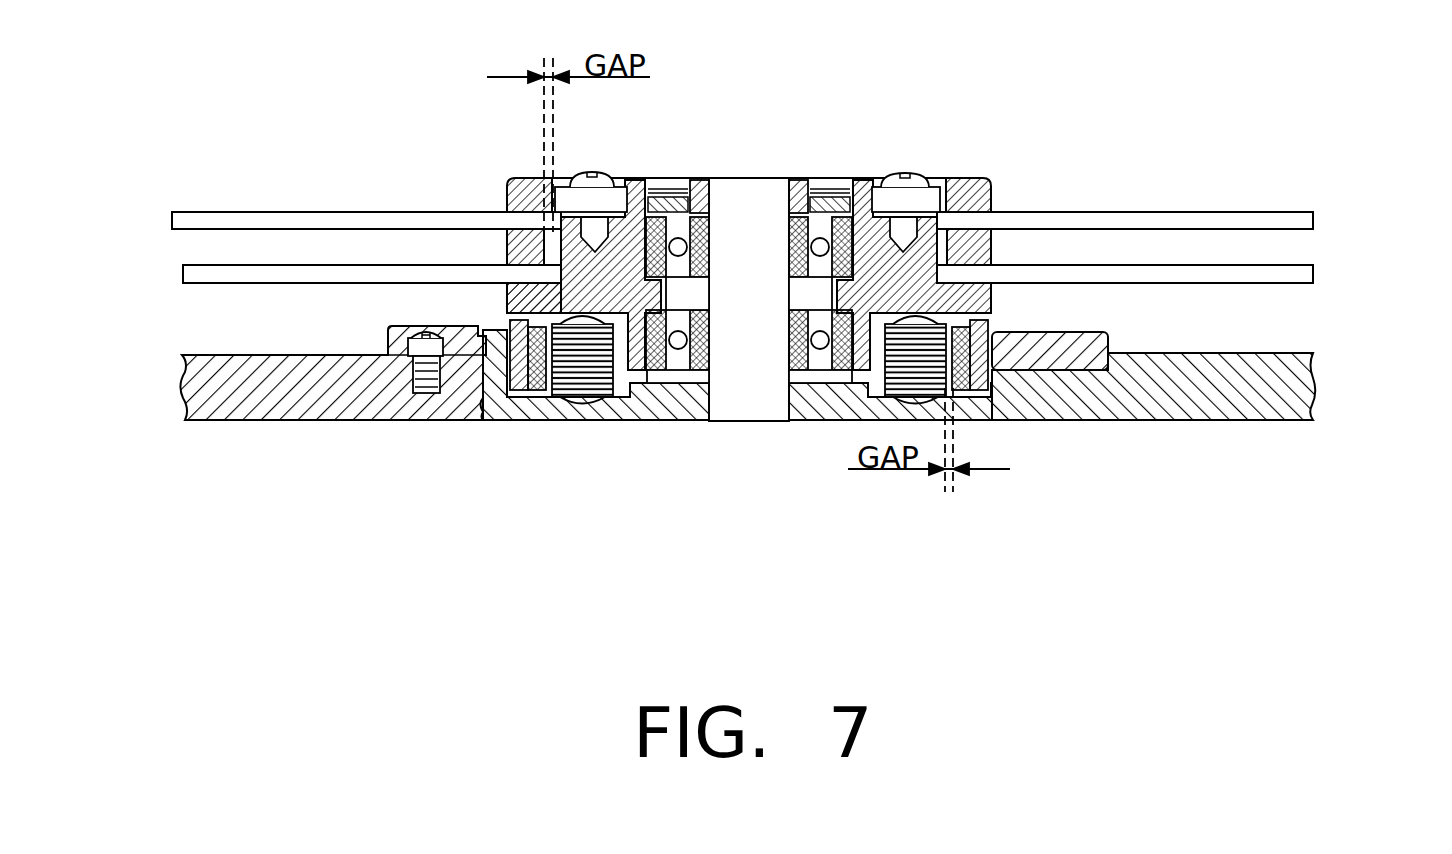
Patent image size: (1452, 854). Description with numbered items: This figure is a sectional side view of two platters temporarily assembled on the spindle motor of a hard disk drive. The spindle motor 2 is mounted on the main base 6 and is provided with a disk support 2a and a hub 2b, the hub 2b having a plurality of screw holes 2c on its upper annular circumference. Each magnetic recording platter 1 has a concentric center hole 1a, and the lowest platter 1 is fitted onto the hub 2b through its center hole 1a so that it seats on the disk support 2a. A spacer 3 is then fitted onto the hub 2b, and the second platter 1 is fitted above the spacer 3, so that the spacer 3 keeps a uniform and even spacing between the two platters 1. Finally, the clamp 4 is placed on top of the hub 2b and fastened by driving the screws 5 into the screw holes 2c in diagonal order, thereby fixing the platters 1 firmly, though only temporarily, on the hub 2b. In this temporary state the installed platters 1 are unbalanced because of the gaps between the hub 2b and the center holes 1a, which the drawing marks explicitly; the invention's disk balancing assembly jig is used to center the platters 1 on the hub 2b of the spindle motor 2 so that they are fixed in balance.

The magnetic recording platter 1 is at (1302, 222).
The center hole 1a is at (510, 247).
The spindle motor 2 is at (637, 400).
The disk support 2a is at (507, 292).
The hub 2b is at (626, 189).
The screw hole 2c is at (860, 188).
The spacer 3 is at (985, 248).
The clamp 4 is at (536, 190).
The screw 5 is at (894, 184).
The main base 6 is at (303, 400).